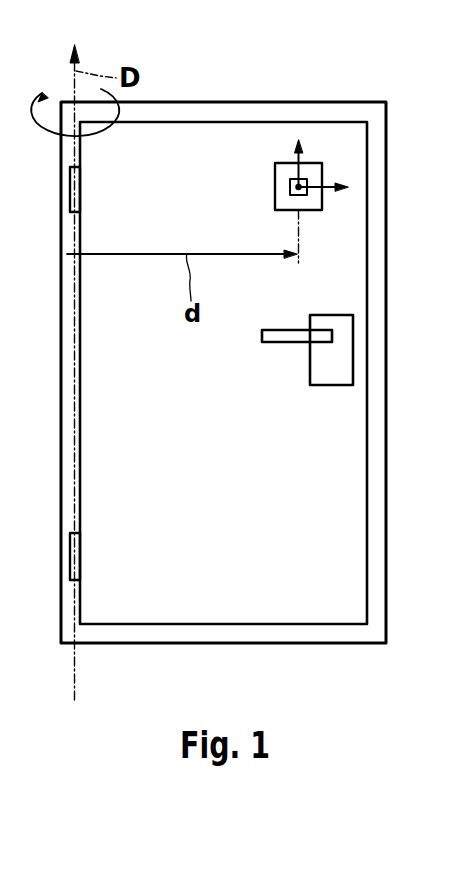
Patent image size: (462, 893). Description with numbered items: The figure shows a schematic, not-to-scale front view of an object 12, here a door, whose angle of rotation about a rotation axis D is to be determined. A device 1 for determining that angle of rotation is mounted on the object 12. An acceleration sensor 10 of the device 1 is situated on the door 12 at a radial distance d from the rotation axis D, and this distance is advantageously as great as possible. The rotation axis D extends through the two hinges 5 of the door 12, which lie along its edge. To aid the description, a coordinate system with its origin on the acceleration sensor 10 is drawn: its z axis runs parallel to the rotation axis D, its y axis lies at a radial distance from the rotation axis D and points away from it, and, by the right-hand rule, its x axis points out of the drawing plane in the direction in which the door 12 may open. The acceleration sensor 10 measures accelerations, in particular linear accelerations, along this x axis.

The object 12 is at (272, 102).
The hinges 5 is at (70, 187).
The device 1 is at (275, 170).
The acceleration sensor 10 is at (305, 195).